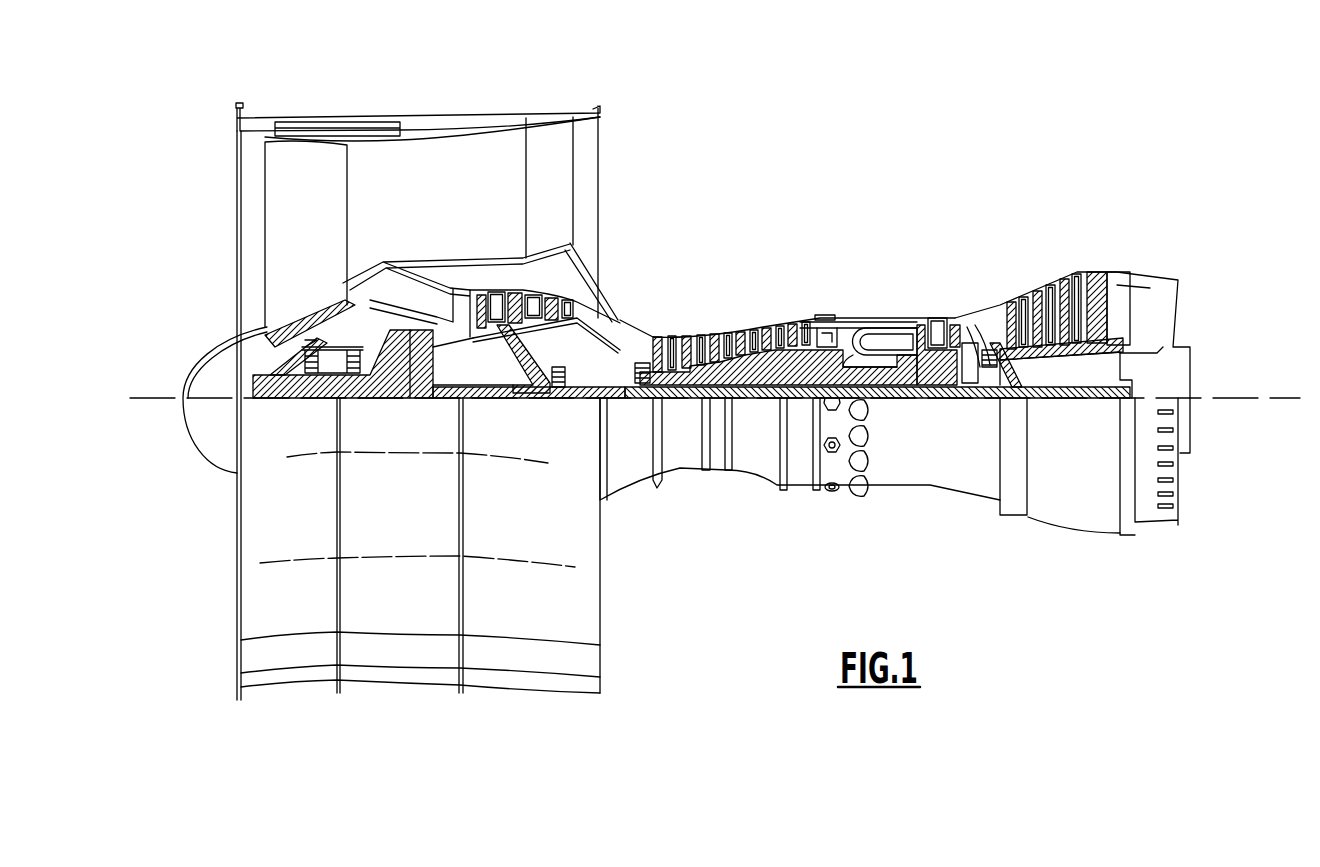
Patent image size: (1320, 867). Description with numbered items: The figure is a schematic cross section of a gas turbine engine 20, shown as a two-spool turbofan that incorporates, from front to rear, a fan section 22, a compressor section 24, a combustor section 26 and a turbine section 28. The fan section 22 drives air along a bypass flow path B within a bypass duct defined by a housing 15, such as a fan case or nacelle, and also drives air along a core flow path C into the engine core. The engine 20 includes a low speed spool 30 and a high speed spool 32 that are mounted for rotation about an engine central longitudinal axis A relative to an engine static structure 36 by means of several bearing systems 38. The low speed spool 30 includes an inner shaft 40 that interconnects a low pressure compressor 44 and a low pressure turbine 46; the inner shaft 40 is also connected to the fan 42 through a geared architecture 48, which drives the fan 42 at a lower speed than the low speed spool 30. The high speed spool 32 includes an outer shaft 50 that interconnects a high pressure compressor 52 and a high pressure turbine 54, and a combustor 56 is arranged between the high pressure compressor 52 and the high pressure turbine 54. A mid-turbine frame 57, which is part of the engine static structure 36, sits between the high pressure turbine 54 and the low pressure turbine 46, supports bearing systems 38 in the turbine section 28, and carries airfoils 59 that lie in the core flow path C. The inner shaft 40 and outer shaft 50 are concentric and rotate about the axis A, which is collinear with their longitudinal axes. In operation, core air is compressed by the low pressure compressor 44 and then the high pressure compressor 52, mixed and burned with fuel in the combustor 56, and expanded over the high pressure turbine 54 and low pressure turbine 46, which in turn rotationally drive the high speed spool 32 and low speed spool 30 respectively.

The housing 15 is at (418, 122).
The gas turbine engine 20 is at (881, 164).
The fan section 22 is at (347, 103).
The compressor section 24 is at (649, 303).
The combustor section 26 is at (872, 295).
The turbine section 28 is at (1021, 255).
The low speed spool 30 is at (757, 402).
The high speed spool 32 is at (802, 323).
The engine static structure 36 is at (798, 490).
The bearing systems 38 is at (553, 388).
The inner shaft 40 is at (625, 400).
The fan 42 is at (322, 243).
The low pressure compressor 44 is at (513, 318).
The low pressure turbine 46 is at (1065, 292).
The geared architecture 48 is at (423, 383).
The outer shaft 50 is at (885, 385).
The high pressure compressor 52 is at (718, 340).
The high pressure turbine 54 is at (938, 317).
The combustor 56 is at (872, 340).
The mid-turbine frame 57 is at (982, 304).
The airfoils 59 is at (1008, 363).
The engine central longitudinal axis A is at (1270, 397).
The bypass flow path B is at (372, 193).
The core flow path C is at (414, 293).